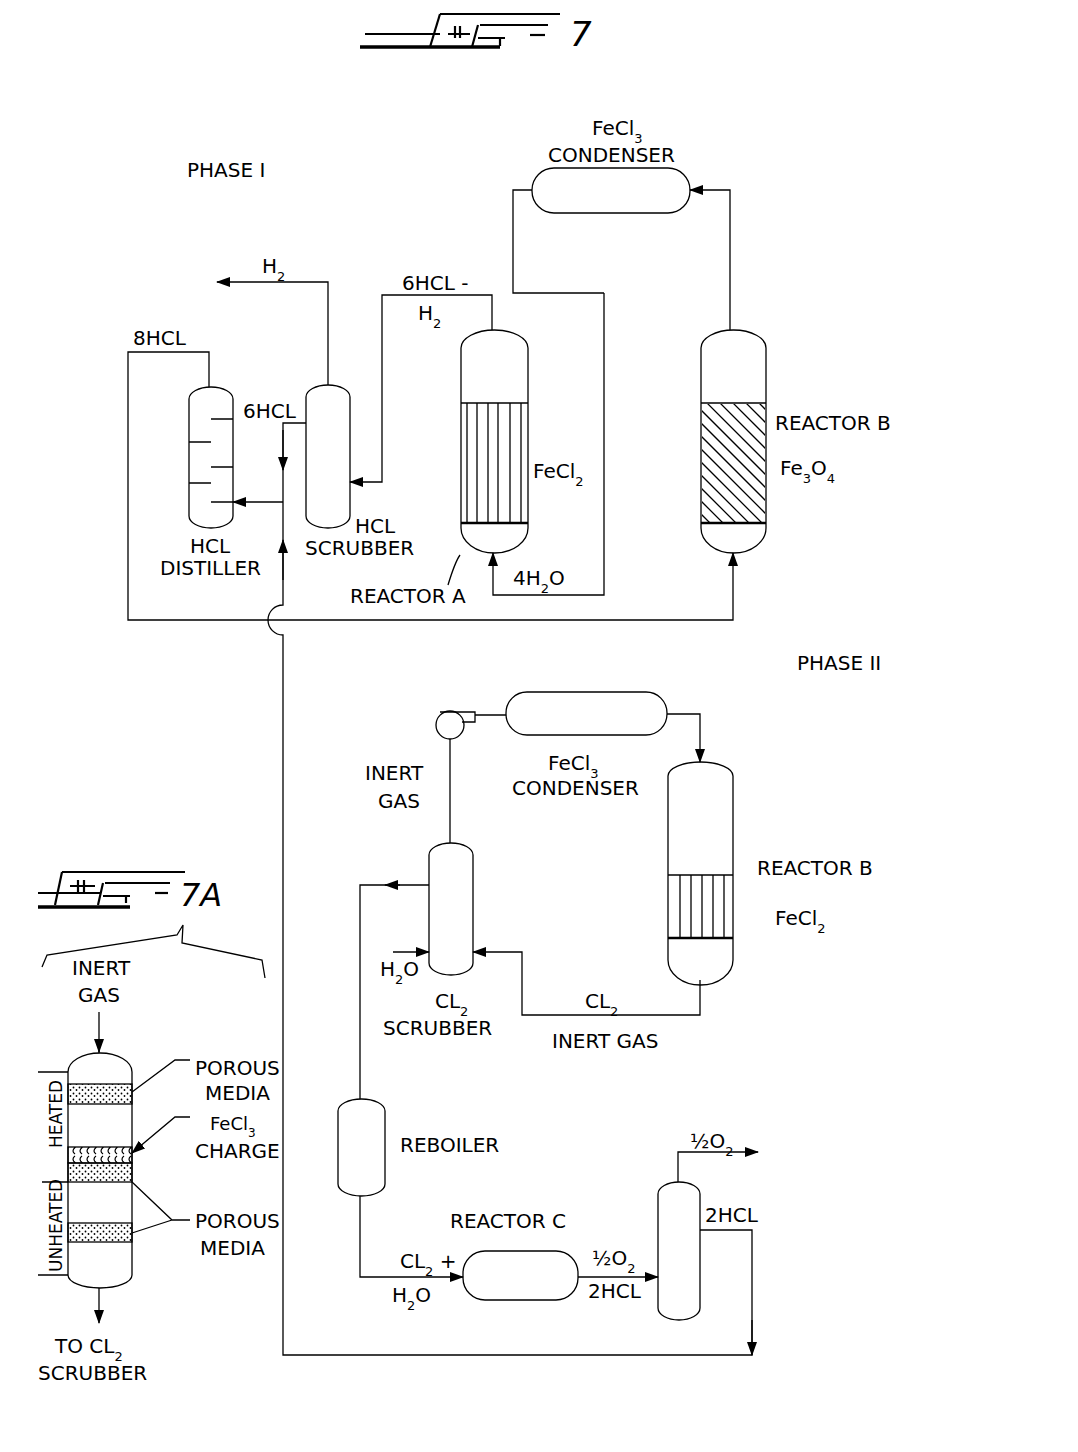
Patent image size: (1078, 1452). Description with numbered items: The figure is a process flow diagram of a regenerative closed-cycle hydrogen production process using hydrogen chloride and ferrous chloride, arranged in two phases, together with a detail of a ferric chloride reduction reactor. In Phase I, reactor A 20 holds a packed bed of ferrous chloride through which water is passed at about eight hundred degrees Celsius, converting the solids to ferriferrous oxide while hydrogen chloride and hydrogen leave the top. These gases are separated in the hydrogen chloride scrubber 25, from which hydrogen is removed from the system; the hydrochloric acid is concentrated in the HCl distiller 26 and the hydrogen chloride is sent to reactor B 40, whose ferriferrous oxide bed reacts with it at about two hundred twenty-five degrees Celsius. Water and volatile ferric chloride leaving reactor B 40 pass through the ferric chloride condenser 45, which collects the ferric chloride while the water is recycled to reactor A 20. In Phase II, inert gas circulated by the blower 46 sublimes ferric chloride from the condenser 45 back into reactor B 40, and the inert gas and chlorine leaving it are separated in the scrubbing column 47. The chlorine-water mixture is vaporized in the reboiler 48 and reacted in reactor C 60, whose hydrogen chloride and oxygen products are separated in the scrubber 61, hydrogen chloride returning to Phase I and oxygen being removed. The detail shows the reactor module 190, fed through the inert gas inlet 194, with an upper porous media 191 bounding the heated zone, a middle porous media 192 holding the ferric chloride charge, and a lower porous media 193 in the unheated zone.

In FIG. 7, the reactor A 20 is at (528, 530).
In FIG. 7, the hydrogen chloride scrubber 25 is at (350, 502).
In FIG. 7, the HCl distiller 26 is at (189, 502).
In FIG. 7, the reactor B 40 is at (766, 528).
In FIG. 7, the ferric chloride condenser 45 is at (683, 171).
In FIG. 7, the blower 46 is at (442, 712).
In FIG. 7, the scrubbing column 47 is at (473, 877).
In FIG. 7, the reboiler 48 is at (385, 1114).
In FIG. 7, the reactor C 60 is at (558, 1300).
In FIG. 7, the scrubber 61 is at (700, 1190).
In FIG. 7A, the reactor module 190 is at (137, 1275).
In FIG. 7A, the porous media 191 is at (132, 1096).
In FIG. 7A, the porous media 192 is at (132, 1173).
In FIG. 7A, the porous media 193 is at (132, 1238).
In FIG. 7A, the inert gas inlet 194 is at (104, 1048).